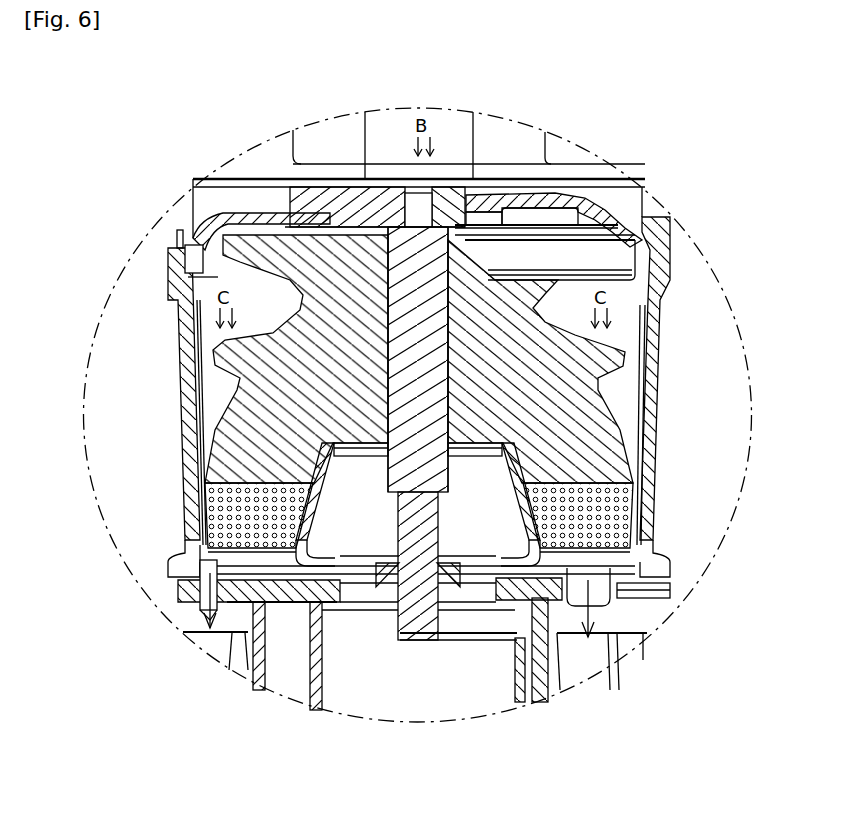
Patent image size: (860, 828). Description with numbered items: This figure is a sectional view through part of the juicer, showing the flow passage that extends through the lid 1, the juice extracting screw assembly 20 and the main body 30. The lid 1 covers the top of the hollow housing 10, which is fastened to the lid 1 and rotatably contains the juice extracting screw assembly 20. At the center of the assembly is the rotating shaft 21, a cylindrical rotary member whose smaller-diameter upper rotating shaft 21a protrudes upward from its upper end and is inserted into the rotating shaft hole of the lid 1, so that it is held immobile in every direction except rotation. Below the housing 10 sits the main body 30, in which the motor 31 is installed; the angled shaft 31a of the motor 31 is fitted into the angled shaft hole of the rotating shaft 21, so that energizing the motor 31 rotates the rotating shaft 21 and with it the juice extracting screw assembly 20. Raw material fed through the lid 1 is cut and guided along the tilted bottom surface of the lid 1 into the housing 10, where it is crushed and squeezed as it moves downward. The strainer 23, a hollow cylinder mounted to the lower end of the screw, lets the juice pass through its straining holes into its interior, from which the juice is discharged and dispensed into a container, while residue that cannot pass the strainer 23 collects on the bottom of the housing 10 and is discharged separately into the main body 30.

The lid 1 is at (568, 140).
The hollow housing 10 is at (663, 328).
The juice extracting screw assembly 20 is at (223, 398).
The rotating shaft 21 is at (315, 235).
The upper rotating shaft 21a is at (420, 190).
The strainer 23 is at (220, 523).
The main body 30 is at (543, 675).
The motor 31 is at (463, 677).
The angled shaft 31a is at (401, 615).